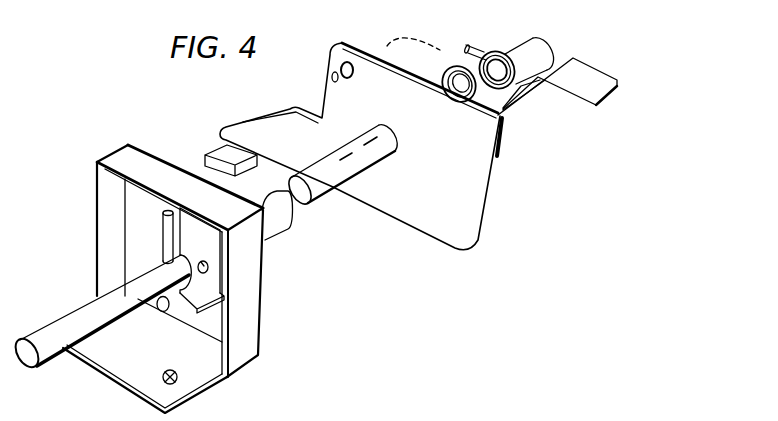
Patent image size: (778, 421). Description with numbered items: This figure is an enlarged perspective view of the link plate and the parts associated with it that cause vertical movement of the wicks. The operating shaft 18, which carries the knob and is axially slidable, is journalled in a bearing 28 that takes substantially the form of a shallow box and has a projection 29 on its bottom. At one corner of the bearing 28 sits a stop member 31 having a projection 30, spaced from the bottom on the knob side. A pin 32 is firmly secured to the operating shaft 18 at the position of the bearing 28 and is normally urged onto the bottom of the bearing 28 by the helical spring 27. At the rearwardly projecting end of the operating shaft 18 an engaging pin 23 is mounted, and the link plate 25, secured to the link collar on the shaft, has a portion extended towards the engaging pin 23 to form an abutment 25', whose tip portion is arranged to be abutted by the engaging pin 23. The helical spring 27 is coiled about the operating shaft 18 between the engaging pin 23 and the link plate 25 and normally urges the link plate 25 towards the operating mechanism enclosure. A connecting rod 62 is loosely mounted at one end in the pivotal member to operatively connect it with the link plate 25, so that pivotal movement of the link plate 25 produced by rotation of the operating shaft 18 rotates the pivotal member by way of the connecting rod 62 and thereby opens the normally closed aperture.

The operating shaft 18 is at (52, 350).
The engaging pin 23 is at (479, 49).
The link plate 25 is at (353, 154).
The abutment 25' is at (557, 106).
The helical spring 27 is at (460, 74).
The bearing 28 is at (250, 313).
The projection 29 is at (157, 311).
The projection 30 is at (203, 260).
The stop member 31 is at (217, 277).
The pin 32 is at (166, 248).
The connecting rod 62 is at (379, 47).